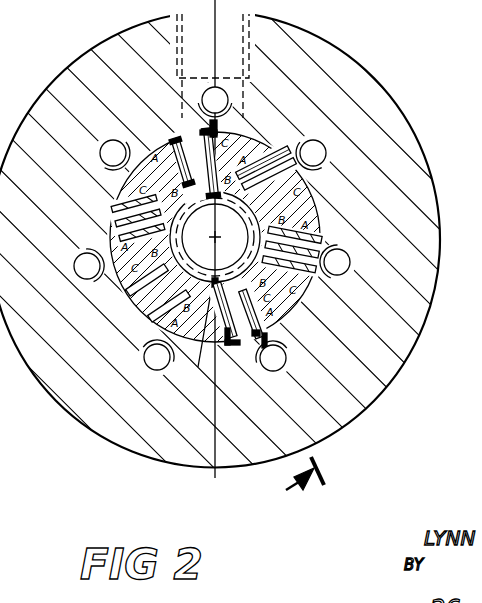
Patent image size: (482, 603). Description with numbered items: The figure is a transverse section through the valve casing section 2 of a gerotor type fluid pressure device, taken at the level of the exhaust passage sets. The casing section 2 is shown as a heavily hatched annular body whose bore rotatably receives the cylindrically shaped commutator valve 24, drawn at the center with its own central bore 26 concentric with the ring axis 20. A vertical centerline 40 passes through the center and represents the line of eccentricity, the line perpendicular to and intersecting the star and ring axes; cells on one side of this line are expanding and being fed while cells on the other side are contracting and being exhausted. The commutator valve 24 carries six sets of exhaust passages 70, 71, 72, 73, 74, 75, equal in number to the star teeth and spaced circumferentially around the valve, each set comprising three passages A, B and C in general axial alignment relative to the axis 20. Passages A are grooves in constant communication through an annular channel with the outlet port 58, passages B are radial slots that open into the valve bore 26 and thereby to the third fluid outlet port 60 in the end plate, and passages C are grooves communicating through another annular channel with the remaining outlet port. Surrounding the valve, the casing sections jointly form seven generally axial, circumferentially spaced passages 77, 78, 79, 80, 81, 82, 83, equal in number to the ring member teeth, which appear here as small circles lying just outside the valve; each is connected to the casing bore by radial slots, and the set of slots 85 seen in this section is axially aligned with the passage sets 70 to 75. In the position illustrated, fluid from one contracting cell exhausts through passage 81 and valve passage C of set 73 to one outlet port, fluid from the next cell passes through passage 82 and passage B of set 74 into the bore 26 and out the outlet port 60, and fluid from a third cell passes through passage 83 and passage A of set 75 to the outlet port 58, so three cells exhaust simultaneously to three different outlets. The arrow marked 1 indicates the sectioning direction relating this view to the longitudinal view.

The section line 1 is at (317, 473).
The valve casing section 2 is at (429, 167).
The ring axis 20 is at (215, 237).
The commutator valve 24 is at (352, 245).
The bore 26 is at (178, 210).
The vertical centerline 40 is at (215, 3).
The fluid outlet port 58 is at (254, 61).
The third fluid outlet port 60 is at (240, 227).
The set of exhaust passages 70 is at (138, 348).
The set of exhaust passages 71 is at (108, 215).
The set of exhaust passages 72 is at (182, 128).
The set of exhaust passages 73 is at (291, 145).
The set of exhaust passages 74 is at (342, 260).
The set of exhaust passages 75 is at (258, 355).
The axially extending passage 77 is at (160, 368).
The axially extending passage 78 is at (77, 262).
The axially extending passage 79 is at (107, 141).
The axially extending passage 80 is at (229, 103).
The axially extending passage 81 is at (327, 155).
The axially extending passage 82 is at (350, 283).
The axially extending passage 83 is at (285, 369).
The set of slots 85 is at (232, 128).